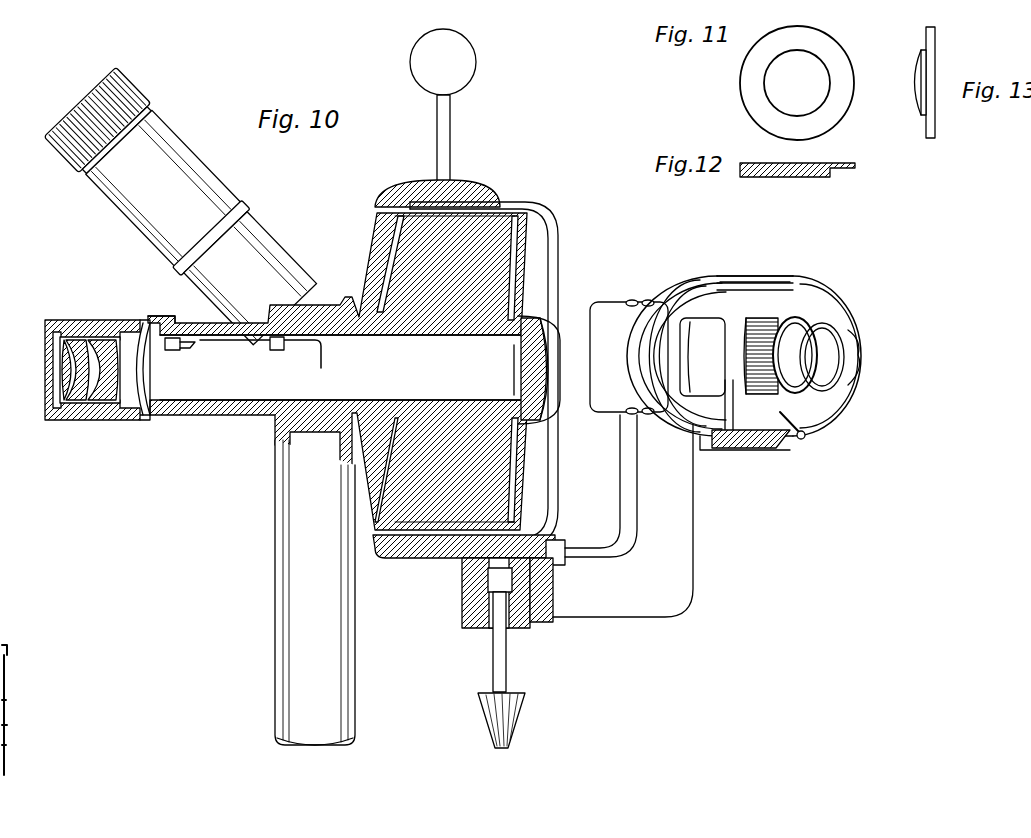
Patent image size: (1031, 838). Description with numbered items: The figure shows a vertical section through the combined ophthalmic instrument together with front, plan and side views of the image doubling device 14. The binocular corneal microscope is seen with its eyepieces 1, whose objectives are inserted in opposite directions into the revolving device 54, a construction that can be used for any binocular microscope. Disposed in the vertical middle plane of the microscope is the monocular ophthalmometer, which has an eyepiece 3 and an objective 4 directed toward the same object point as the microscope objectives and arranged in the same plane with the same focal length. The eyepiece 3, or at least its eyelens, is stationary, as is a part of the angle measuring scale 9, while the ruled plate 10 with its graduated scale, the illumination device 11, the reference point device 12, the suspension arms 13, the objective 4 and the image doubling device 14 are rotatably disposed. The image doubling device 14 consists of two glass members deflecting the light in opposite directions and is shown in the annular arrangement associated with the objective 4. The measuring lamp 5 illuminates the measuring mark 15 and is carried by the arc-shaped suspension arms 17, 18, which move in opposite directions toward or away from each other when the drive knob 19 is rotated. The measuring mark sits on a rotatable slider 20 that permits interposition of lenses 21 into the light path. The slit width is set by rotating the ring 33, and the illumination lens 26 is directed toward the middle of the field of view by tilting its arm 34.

In FIG. 10, the eyepieces 1 is at (72, 107).
In FIG. 10, the eyepiece 3 is at (45, 370).
In FIG. 10, the objective 4 is at (551, 360).
In FIG. 10, the slit lamp 5 is at (748, 365).
In FIG. 10, the angle measuring device or scale 9 is at (140, 325).
In FIG. 10, the ruled plate 10 is at (135, 417).
In FIG. 10, the illumination device 11 is at (178, 340).
In FIG. 10, the reference point device 12 is at (300, 340).
In FIG. 10, the suspension arms 13 is at (530, 207).
In FIG. 10, the image doubling device 14 is at (547, 322).
In FIG. 11, the image doubling device 14 is at (850, 72).
In FIG. 13, the image doubling device 14 is at (917, 72).
In FIG. 12, the image doubling device 14 is at (822, 163).
In FIG. 10, the measuring indicia or marks 15 is at (762, 447).
In FIG. 10, the arc-shaped suspension arm 17 is at (540, 628).
In FIG. 10, the arc-shaped suspension arm 18 is at (485, 599).
In FIG. 10, the drive knob 19 is at (483, 718).
In FIG. 10, the rotatable sliders 20 is at (772, 290).
In FIG. 10, the lenses 21 is at (820, 357).
In FIG. 10, the illumination lens 26 is at (793, 373).
In FIG. 10, the ring 33 is at (717, 293).
In FIG. 10, the arm 34 is at (725, 385).
In FIG. 10, the revolving device 54 is at (503, 230).